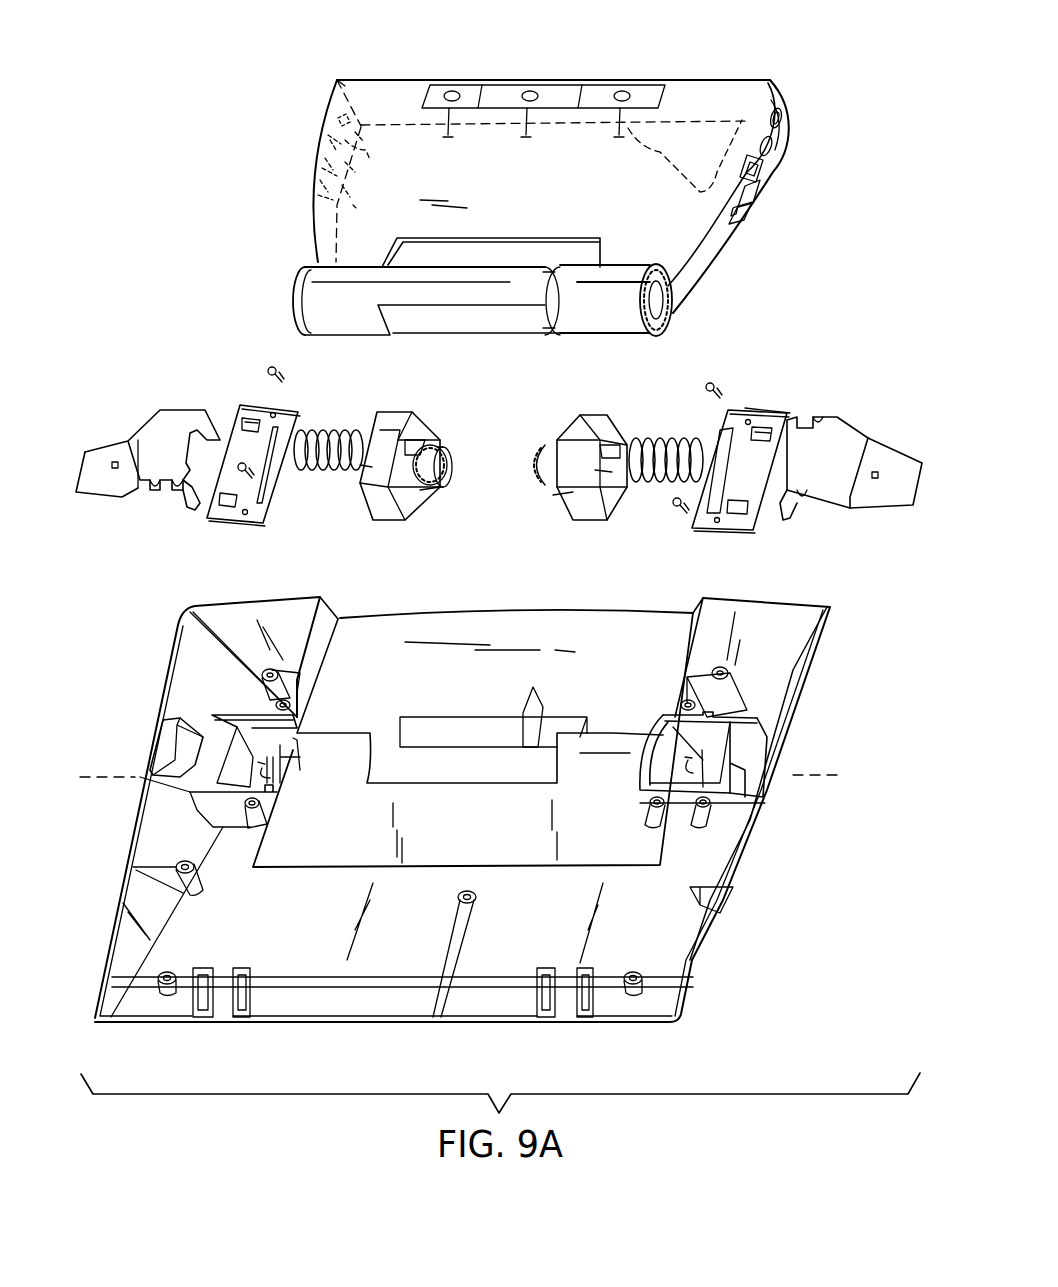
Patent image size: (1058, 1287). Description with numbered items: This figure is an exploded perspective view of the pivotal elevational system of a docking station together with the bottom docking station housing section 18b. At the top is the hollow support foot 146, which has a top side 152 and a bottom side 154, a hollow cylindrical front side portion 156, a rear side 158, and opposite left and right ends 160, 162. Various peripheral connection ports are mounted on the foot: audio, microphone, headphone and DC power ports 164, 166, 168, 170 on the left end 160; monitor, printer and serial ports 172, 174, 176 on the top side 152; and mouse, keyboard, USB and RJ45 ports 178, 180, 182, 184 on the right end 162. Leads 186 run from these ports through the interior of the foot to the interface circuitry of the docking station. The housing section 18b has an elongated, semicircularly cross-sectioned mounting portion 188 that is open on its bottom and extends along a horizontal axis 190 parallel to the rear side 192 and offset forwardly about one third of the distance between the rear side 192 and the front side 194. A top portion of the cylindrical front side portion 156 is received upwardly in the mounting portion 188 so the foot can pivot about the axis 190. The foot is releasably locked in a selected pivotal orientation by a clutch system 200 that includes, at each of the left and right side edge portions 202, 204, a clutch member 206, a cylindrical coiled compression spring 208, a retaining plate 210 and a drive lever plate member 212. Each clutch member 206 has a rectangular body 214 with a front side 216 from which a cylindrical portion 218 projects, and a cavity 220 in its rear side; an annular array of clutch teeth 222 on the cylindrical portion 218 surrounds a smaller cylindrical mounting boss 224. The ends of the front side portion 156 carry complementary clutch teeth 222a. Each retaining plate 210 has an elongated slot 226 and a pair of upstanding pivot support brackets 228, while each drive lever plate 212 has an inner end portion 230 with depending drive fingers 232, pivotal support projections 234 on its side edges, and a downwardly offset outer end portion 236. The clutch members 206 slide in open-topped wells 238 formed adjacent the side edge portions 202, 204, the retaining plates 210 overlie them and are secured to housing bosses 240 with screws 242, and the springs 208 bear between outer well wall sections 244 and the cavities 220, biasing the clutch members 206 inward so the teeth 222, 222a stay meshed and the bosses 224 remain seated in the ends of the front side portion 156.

The bottom docking station housing section 18b is at (805, 740).
The support foot 146 is at (737, 57).
The top side 152 is at (548, 196).
The bottom side 154 is at (707, 273).
The hollow cylindrical front side portion 156 is at (340, 307).
The rear side 158 is at (783, 89).
The left end 160 is at (331, 103).
The right end 162 is at (790, 136).
The audio connection port 164 is at (316, 195).
The microphone connection port 166 is at (312, 164).
The headphone connection port 168 is at (310, 135).
The DC power connection port 170 is at (327, 107).
The monitor port 172 is at (622, 90).
The printer port 174 is at (531, 90).
The serial port 176 is at (457, 90).
The mouse port 178 is at (748, 216).
The keyboard port 180 is at (762, 183).
The USB port 182 is at (777, 148).
The RJ45 port 184 is at (780, 118).
The leads 186 is at (362, 150).
The mounting portion 188 is at (330, 743).
The horizontal axis 190 is at (86, 782).
The rear side 192 is at (773, 597).
The front side 194 is at (468, 1024).
The clutch system 200 is at (753, 390).
The left side edge portion 202 is at (180, 635).
The right side edge portion 204 is at (820, 658).
The clutch member 206 is at (403, 392).
The cylindrical coiled compression spring 208 is at (337, 473).
The retaining plate 210 is at (268, 405).
The drive lever plate member 212 is at (138, 500).
The rectangular body 214 is at (383, 507).
The front side 216 is at (417, 430).
The cylindrical portion 218 is at (422, 490).
The cavity 220 is at (377, 430).
The clutch teeth 222 is at (440, 440).
The clutch teeth 222a is at (295, 290).
The cylindrical mounting boss 224 is at (448, 467).
The elongated slot 226 is at (260, 497).
The pivot support brackets 228 is at (262, 423).
The inner end portion 230 is at (157, 447).
The drive fingers 232 is at (207, 430).
The pivotal support projections 234 is at (183, 410).
The outer end portion 236 is at (104, 463).
The well area 238 is at (283, 768).
The housing bosses 240 is at (267, 693).
The screws 242 is at (279, 367).
The outer well wall section 244 is at (237, 780).